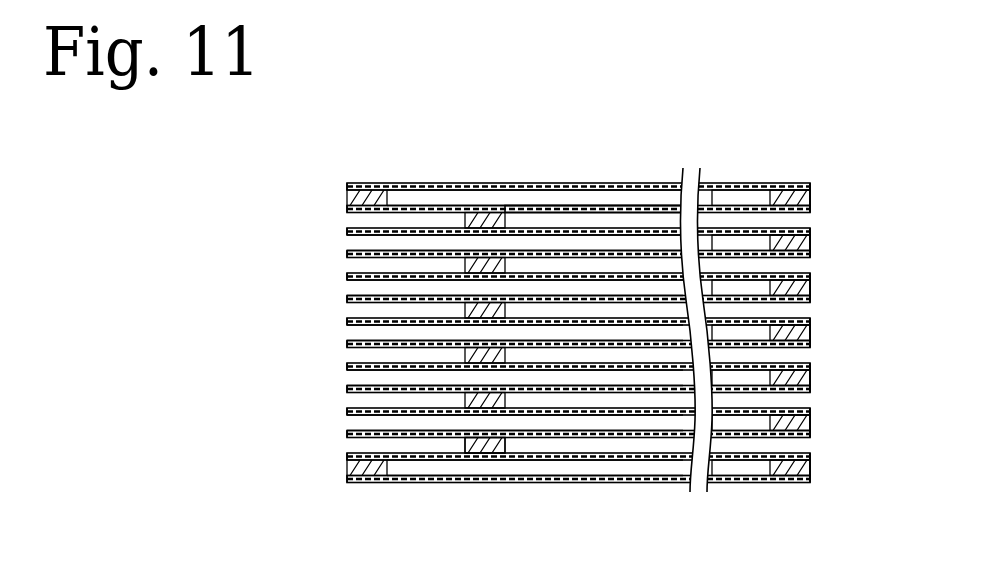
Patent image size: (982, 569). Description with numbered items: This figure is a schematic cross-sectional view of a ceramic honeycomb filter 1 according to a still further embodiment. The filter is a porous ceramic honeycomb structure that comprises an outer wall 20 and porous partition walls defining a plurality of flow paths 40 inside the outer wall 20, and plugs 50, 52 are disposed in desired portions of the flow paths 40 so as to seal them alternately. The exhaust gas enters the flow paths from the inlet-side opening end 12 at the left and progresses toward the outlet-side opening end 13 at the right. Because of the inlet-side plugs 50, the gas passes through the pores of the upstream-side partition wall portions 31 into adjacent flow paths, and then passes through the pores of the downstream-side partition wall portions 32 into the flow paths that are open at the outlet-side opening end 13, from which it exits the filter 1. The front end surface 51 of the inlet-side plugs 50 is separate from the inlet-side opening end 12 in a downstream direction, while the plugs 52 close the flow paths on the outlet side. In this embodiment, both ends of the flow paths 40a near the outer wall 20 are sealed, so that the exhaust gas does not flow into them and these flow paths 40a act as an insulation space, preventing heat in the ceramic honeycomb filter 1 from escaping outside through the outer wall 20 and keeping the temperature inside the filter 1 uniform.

The ceramic honeycomb filter 1 is at (468, 131).
The inlet-side opening end 12 is at (347, 322).
The outlet-side opening end 13 is at (814, 311).
The outer wall 20 is at (647, 183).
The upstream-side partition wall portions 31 is at (410, 222).
The downstream-side partition wall portions 32 is at (601, 218).
The flow paths 40 is at (752, 200).
The flow paths near the outer wall 40a is at (513, 188).
The plug 50 is at (473, 400).
The front end surface 51 is at (464, 445).
The plug 52 is at (812, 411).